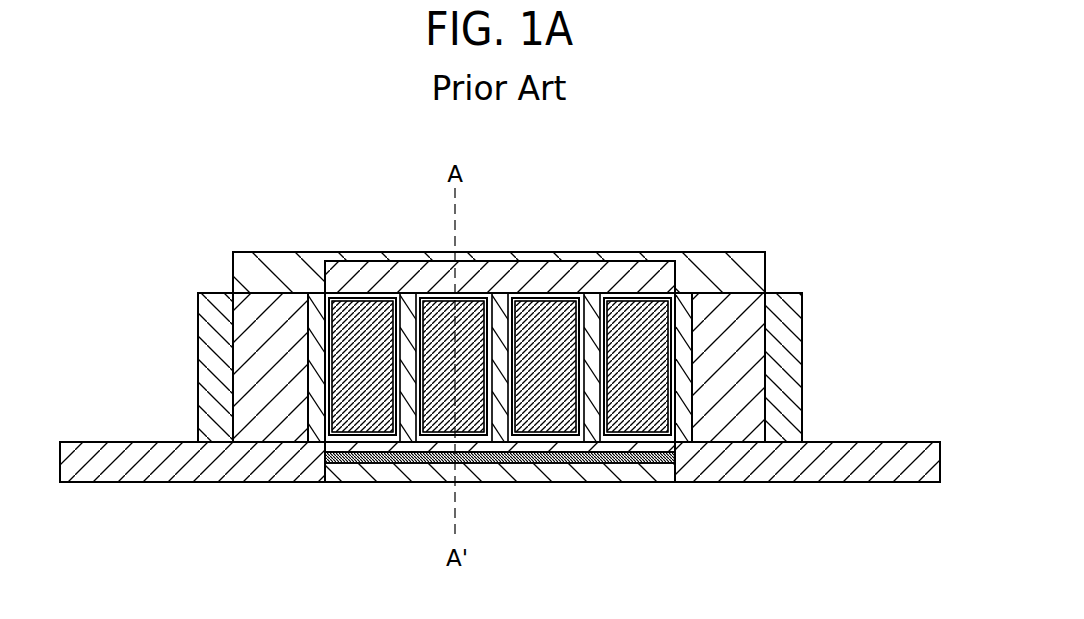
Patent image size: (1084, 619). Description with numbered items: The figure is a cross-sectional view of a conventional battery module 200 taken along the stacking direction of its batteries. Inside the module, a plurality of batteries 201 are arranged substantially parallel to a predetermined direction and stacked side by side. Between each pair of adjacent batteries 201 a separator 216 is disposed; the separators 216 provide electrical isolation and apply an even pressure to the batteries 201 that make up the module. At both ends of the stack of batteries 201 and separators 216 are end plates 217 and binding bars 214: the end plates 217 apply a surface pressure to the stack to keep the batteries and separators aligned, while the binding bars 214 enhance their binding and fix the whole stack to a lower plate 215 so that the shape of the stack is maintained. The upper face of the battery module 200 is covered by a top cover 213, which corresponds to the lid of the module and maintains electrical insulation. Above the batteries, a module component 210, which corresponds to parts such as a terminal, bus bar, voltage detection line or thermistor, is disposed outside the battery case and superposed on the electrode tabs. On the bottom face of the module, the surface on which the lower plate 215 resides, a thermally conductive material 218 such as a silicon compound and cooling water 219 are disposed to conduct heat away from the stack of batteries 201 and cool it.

The battery module 200 is at (834, 192).
The battery 201 is at (361, 317).
The module component 210 is at (593, 277).
The top cover 213 is at (300, 273).
The binding bar 214 is at (215, 340).
The lower plate 215 is at (137, 457).
The separator 216 is at (318, 437).
The end plate 217 is at (261, 317).
The thermally conductive material 218 is at (637, 447).
The cooling water 219 is at (547, 458).